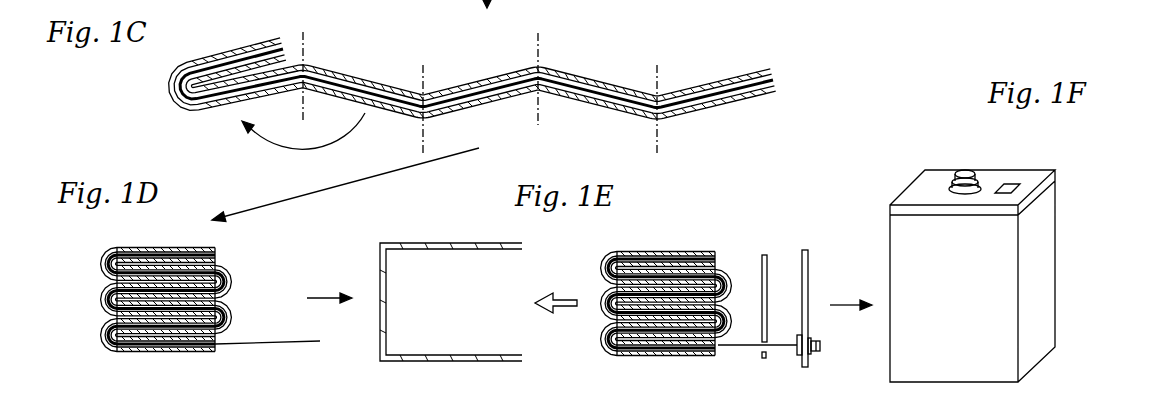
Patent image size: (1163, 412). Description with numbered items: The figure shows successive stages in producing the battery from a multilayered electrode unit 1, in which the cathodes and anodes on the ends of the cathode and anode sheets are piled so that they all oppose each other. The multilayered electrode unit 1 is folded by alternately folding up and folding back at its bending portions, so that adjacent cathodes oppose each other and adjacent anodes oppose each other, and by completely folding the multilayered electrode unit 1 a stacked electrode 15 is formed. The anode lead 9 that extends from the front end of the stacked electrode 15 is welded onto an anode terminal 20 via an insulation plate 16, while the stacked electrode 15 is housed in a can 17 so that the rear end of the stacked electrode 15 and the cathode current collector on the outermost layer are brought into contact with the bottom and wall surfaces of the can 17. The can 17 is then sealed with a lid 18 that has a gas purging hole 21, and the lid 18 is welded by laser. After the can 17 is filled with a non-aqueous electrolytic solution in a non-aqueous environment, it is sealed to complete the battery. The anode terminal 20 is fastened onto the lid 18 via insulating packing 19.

In FIG. 1C, the multilayered electrode unit 1 is at (757, 70).
In FIG. 1E, the anode lead 9 is at (779, 348).
In FIG. 1D, the stacked electrode 15 is at (96, 248).
In FIG. 1E, the stacked electrode 15 is at (603, 256).
In FIG. 1E, the insulation plate 16 is at (760, 262).
In FIG. 1E, the can 17 is at (470, 243).
In FIG. 1F, the can 17 is at (1070, 347).
In FIG. 1E, the lid 18 is at (802, 262).
In FIG. 1F, the lid 18 is at (1052, 182).
In FIG. 1E, the insulating packing 19 is at (812, 357).
In FIG. 1F, the insulating packing 19 is at (949, 186).
In FIG. 1E, the anode terminal 20 is at (821, 346).
In FIG. 1F, the anode terminal 20 is at (963, 172).
In FIG. 1F, the gas purging hole 21 is at (1008, 184).